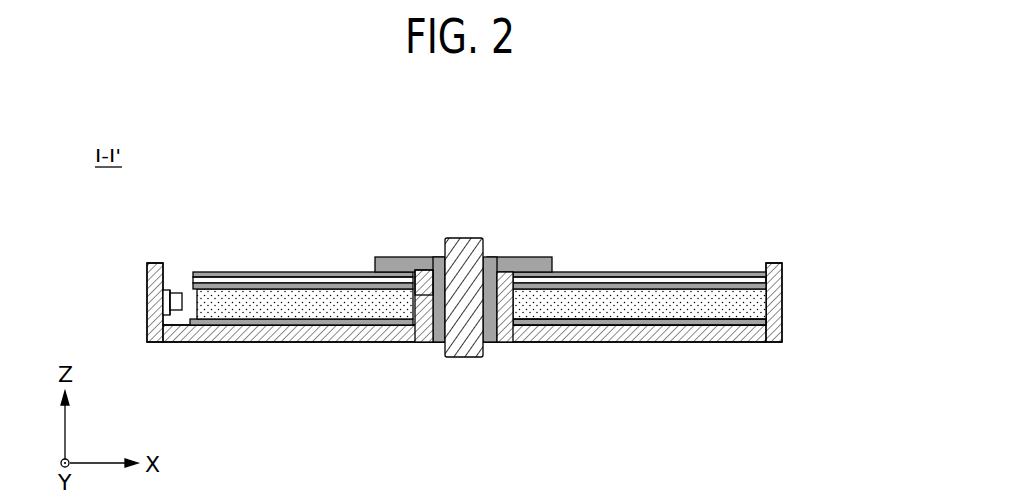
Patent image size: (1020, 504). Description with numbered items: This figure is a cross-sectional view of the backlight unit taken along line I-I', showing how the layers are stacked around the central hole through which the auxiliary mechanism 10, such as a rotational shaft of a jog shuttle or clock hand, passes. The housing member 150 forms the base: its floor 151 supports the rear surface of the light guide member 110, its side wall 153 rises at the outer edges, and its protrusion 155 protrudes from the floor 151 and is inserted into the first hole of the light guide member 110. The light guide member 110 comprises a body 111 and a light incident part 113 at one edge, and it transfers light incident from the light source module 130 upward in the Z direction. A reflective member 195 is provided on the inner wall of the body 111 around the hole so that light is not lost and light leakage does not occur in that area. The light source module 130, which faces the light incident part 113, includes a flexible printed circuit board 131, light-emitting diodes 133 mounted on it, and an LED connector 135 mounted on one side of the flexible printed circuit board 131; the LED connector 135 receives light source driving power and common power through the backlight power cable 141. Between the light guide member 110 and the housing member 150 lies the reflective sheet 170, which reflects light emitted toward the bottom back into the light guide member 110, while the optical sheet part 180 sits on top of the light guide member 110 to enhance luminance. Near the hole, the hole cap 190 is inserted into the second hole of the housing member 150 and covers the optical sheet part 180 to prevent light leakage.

The auxiliary mechanism 10 is at (459, 238).
The light guide member 110 is at (466, 373).
The body 111 is at (182, 407).
The light incident part 113 is at (188, 340).
The light source module 130 is at (221, 231).
The flexible printed circuit board 131 is at (166, 292).
The light-emitting diodes 133 is at (170, 292).
The LED connector 135 is at (173, 294).
The backlight power cable 141 is at (163, 341).
The housing member 150 is at (783, 343).
The floor 151 is at (674, 333).
The side wall 153 is at (783, 297).
The protrusion 155 is at (427, 272).
The reflective sheet 170 is at (615, 323).
The optical sheet part 180 is at (655, 287).
The hole cap 190 is at (376, 258).
The reflective member 195 is at (422, 318).